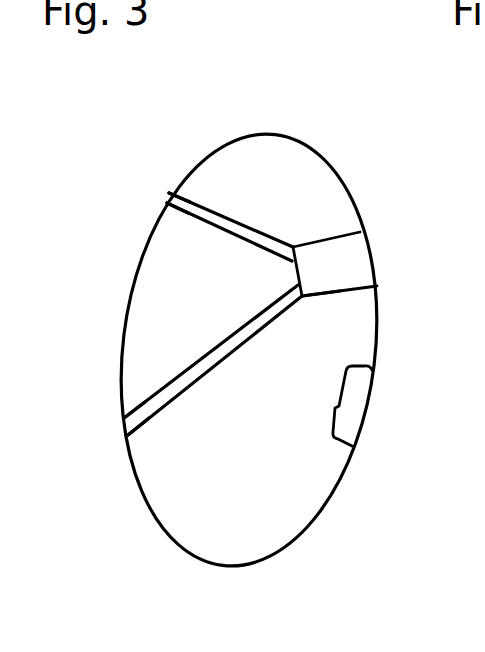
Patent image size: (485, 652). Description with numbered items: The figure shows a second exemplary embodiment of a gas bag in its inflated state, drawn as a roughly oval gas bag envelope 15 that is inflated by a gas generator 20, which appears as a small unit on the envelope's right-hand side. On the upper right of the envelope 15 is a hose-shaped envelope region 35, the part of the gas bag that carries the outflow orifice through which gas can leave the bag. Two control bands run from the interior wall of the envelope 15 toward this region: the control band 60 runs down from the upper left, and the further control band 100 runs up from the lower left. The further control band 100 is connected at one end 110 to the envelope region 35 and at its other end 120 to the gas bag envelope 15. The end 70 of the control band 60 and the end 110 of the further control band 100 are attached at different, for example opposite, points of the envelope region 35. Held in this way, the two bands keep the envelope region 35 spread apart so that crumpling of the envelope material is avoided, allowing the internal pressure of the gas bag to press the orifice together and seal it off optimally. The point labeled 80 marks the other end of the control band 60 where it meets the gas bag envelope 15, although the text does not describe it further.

The gas bag envelope 15 is at (260, 118).
The gas generator 20 is at (360, 412).
The envelope region 35 is at (347, 260).
The control band 60 is at (240, 215).
The end of control band 70 is at (290, 261).
The first strap end 80 is at (170, 198).
The further control band 100 is at (217, 360).
The end of further control band 110 is at (302, 297).
The other end of further control band 120 is at (127, 440).